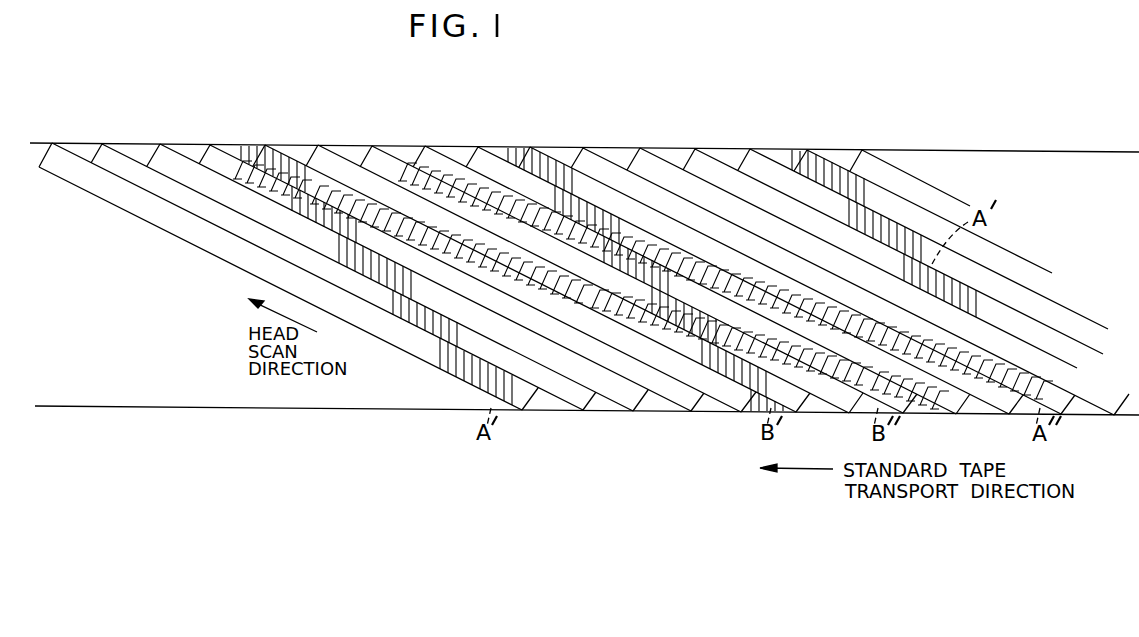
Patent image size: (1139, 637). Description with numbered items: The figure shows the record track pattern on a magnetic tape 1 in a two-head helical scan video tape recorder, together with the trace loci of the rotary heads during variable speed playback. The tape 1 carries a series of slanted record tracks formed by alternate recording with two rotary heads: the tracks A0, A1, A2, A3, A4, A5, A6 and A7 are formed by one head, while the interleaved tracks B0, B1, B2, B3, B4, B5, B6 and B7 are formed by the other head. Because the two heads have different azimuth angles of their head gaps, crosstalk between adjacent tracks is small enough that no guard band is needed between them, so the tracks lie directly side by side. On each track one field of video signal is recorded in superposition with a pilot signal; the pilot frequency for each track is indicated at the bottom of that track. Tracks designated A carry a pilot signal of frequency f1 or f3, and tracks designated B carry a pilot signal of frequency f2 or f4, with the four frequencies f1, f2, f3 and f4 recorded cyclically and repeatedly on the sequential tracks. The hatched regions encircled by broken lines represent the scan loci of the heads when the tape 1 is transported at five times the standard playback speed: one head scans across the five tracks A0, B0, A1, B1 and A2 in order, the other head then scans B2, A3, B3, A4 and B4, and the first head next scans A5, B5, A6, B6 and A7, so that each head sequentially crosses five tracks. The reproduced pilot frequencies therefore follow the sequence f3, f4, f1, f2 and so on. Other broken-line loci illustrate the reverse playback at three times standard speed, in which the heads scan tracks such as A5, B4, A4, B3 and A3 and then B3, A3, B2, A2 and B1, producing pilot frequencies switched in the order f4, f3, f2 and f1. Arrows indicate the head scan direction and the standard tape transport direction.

The magnetic tape 1 is at (944, 148).
The record track A0 is at (62, 161).
The record track B0 is at (112, 162).
The record track A1 is at (170, 162).
The record track B1 is at (220, 163).
The record track A2 is at (275, 163).
The record track B2 is at (328, 163).
The record track A3 is at (382, 164).
The record track B3 is at (435, 164).
The record track A4 is at (488, 165).
The record track B4 is at (540, 165).
The record track A5 is at (593, 166).
The record track B5 is at (650, 166).
The record track A6 is at (705, 167).
The record track B6 is at (760, 167).
The record track A7 is at (817, 168).
The record track B7 is at (872, 168).
The pilot signal frequency f1 is at (840, 399).
The pilot signal frequency f2 is at (894, 399).
The pilot signal frequency f3 is at (732, 398).
The pilot signal frequency f4 is at (787, 398).